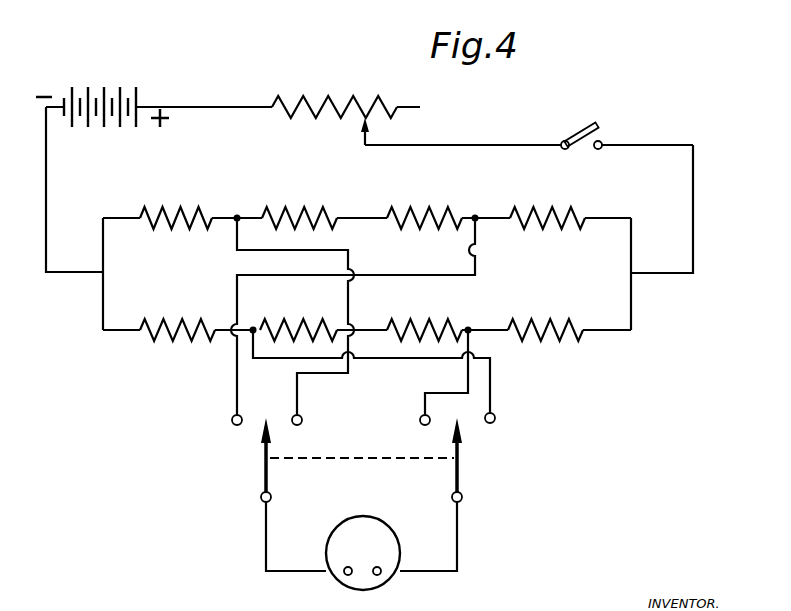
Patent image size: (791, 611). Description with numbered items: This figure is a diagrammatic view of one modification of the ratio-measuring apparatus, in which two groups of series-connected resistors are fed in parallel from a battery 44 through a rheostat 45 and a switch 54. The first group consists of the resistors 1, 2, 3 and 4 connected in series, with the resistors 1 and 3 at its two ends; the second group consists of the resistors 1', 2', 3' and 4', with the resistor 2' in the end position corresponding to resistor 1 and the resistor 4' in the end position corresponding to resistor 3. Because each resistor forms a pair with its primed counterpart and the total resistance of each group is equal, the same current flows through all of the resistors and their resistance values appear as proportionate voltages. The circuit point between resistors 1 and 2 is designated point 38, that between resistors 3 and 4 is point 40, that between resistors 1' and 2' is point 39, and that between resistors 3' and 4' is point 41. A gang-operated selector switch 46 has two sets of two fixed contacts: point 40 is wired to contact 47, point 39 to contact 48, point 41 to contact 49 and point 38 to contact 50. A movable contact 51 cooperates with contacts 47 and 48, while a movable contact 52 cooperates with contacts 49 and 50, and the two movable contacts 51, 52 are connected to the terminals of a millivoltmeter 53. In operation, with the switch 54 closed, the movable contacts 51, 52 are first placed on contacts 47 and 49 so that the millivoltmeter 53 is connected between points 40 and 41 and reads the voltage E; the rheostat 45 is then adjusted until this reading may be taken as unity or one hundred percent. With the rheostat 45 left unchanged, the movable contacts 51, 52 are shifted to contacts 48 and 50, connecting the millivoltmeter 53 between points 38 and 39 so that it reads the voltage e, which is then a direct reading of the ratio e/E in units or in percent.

The battery 44 is at (110, 85).
The rheostat 45 is at (330, 102).
The switch 54 is at (578, 128).
The resistor 2 is at (176, 200).
The point 38 is at (238, 214).
The resistor 1 is at (299, 200).
The resistor 4 is at (424, 200).
The point 40 is at (476, 214).
The resistor 3 is at (547, 200).
The resistor 1' is at (177, 312).
The point 39 is at (255, 326).
The resistor 2' is at (298, 312).
The resistor 3' is at (424, 312).
The point 41 is at (467, 326).
The resistor 4' is at (545, 312).
The contact 47 is at (231, 419).
The contact 48 is at (303, 418).
The contact 49 is at (420, 417).
The contact 50 is at (497, 417).
The movable contact 51 is at (263, 476).
The gang-operated selector switch 46 is at (466, 483).
The movable contact 52 is at (460, 457).
The millivoltmeter 53 is at (343, 576).